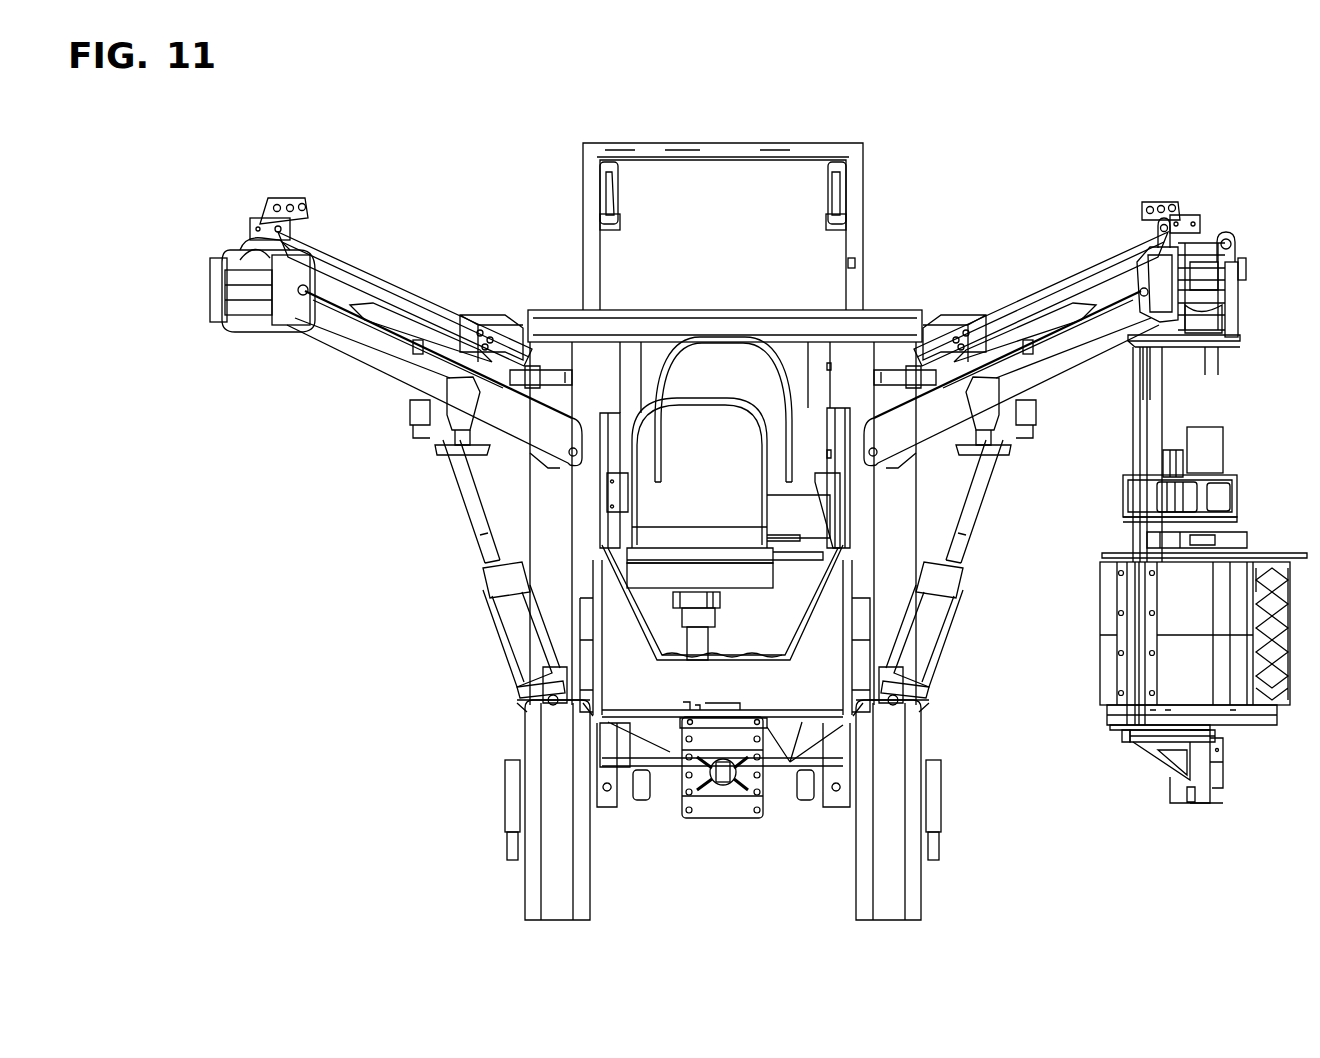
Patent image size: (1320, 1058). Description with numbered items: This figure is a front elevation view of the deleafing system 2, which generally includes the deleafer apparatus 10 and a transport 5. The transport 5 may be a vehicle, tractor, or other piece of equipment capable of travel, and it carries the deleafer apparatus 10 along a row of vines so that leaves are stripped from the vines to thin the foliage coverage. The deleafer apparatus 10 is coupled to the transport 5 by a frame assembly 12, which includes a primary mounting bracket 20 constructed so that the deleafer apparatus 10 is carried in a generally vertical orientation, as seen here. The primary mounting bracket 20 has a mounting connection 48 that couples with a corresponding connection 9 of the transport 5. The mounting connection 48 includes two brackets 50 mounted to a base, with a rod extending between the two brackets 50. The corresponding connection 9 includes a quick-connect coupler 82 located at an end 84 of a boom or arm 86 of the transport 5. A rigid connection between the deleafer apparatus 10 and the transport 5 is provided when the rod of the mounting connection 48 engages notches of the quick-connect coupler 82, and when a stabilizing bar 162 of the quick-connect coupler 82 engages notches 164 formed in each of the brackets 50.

The deleafing system 2 is at (480, 224).
The transport 5 is at (881, 312).
The corresponding connection 9 is at (1126, 275).
The deleafer apparatus 10 is at (1088, 752).
The frame assembly 12 is at (1120, 456).
The primary mounting bracket 20 is at (1177, 400).
The mounting connection 48 is at (1238, 265).
The brackets 50 is at (1165, 238).
The quick-connect coupler 82 is at (248, 302).
The end 84 is at (313, 310).
The arm 86 is at (372, 347).
The stabilizing bar 162 is at (1210, 292).
The notches 164 is at (1217, 283).